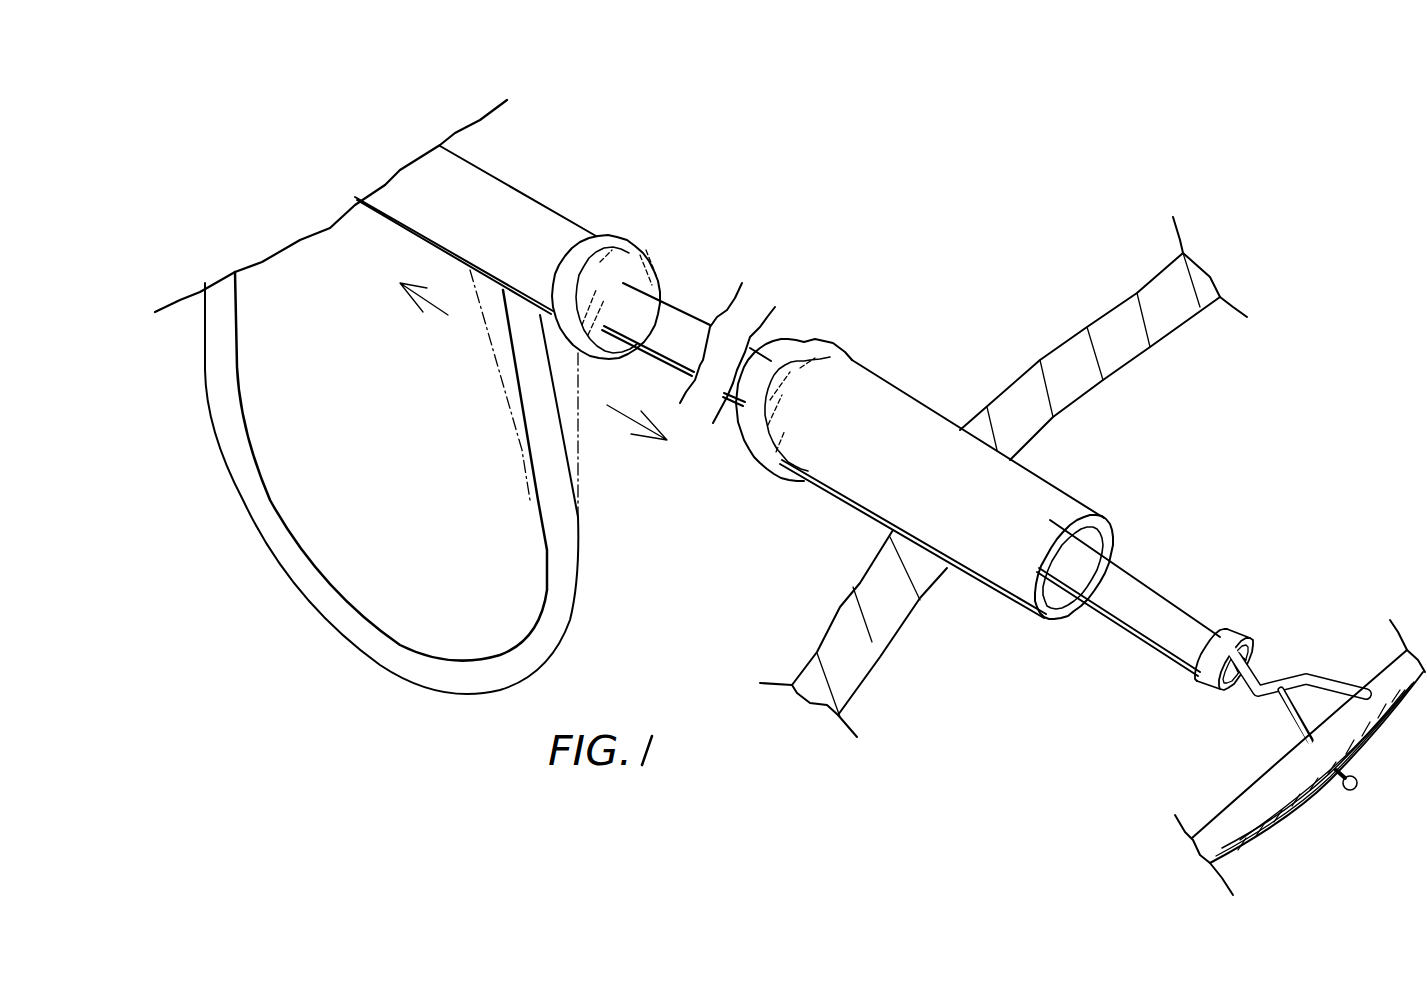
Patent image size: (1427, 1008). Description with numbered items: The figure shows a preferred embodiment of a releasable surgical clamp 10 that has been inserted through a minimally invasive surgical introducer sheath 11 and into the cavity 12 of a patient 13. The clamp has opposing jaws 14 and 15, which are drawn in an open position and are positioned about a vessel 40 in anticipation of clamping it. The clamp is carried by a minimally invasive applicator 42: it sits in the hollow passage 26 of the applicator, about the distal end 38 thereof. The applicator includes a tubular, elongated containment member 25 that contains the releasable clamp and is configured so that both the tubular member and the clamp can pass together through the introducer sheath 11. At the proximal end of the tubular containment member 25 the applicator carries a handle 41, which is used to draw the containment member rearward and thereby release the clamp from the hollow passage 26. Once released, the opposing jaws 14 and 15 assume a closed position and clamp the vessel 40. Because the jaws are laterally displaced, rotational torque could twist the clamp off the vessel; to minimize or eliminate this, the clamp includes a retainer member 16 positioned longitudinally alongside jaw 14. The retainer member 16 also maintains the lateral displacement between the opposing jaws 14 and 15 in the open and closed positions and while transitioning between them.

The releasable surgical clamp 10 is at (1283, 666).
The minimally invasive surgical introducer sheath 11 is at (1043, 478).
The cavity 12 is at (1148, 403).
The patient 13 is at (1007, 386).
The opposing jaw 14 is at (1318, 680).
The opposing jaw 15 is at (1340, 786).
The retainer member 16 is at (1300, 695).
The tubular elongated containment member 25 is at (1128, 565).
The hollow passage 26 is at (1222, 674).
The distal end 38 is at (1236, 630).
The vessel 40 is at (1277, 826).
The handle 41 is at (555, 205).
The minimally invasive applicator 42 is at (714, 300).